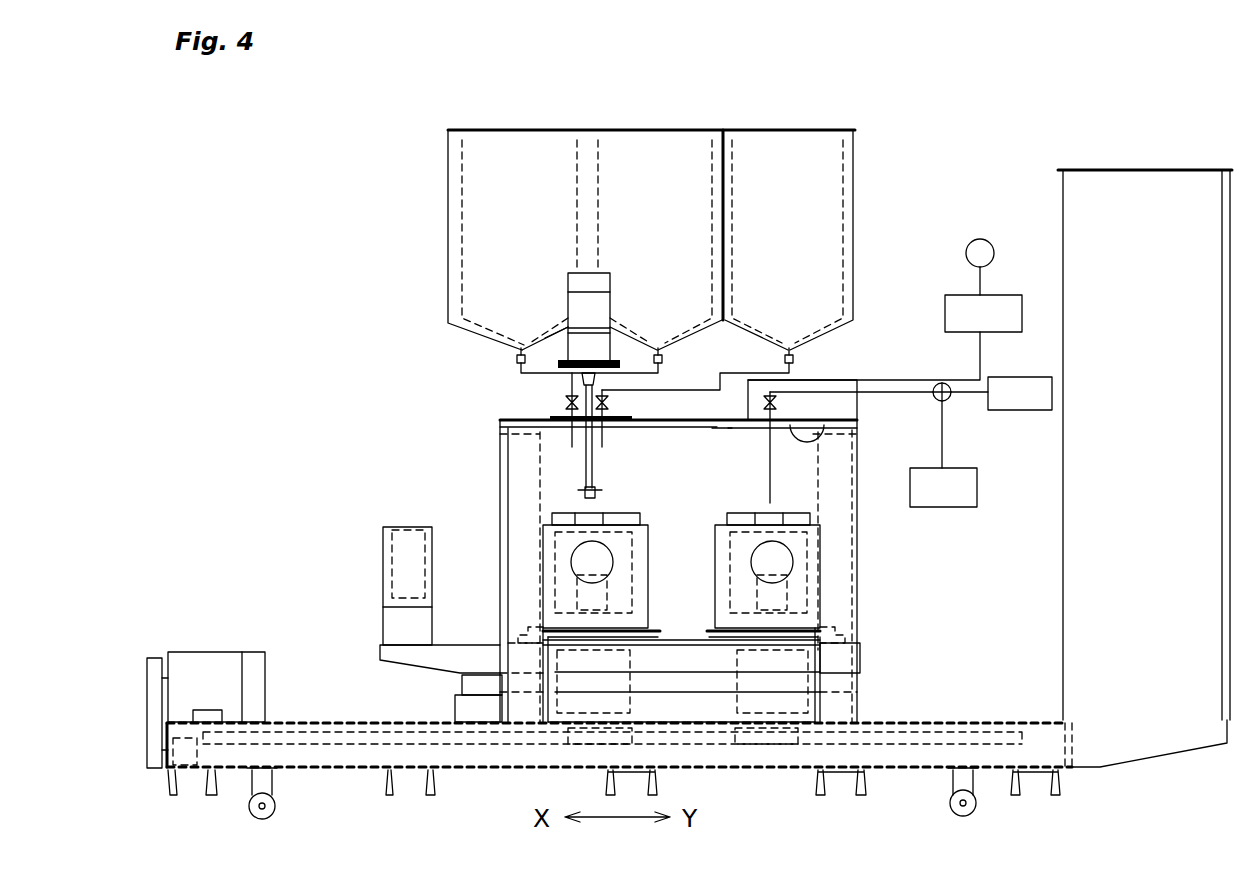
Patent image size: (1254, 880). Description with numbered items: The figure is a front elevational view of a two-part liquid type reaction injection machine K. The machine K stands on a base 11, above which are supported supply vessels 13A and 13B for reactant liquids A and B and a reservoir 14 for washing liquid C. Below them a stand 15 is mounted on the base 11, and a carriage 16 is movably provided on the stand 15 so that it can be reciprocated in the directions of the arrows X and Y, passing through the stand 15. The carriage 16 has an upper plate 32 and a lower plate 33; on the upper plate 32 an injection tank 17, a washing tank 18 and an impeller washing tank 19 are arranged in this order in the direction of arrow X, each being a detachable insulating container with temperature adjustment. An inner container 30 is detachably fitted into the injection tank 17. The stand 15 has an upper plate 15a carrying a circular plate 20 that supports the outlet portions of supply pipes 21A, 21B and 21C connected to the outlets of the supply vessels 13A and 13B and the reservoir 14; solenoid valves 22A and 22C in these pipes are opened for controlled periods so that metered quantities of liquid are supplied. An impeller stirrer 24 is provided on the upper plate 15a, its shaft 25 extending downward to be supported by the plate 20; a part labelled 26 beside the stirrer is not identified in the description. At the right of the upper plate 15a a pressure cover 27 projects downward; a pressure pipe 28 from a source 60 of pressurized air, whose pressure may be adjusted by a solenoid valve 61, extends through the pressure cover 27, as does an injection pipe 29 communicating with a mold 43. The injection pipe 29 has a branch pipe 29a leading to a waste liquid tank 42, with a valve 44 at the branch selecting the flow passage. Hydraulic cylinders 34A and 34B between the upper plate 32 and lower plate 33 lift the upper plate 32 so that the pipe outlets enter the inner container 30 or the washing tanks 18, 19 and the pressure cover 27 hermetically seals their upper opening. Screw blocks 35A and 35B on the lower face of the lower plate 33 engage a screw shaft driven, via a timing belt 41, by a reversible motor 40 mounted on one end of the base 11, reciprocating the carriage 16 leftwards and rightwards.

The reaction injection machine K is at (973, 98).
The base 11 is at (805, 756).
The supply vessel 13A is at (513, 150).
The supply vessel 13B is at (663, 160).
The reservoir 14 is at (780, 155).
The stand 15 is at (860, 456).
The upper plate 15a is at (718, 430).
The carriage 16 is at (378, 646).
The injection tank 17 is at (828, 538).
The washing tank 18 is at (637, 530).
The impeller washing tank 19 is at (433, 555).
The circular plate 20 is at (550, 418).
The supply pipe 21A is at (515, 368).
The supply pipe 21B is at (665, 358).
The supply pipe 21C is at (797, 358).
The solenoid valve 22A is at (566, 402).
The solenoid valve 22C is at (612, 400).
The impeller stirrer 24 is at (592, 273).
The shaft 25 is at (598, 465).
The motor mount 26 is at (567, 333).
The pressure cover 27 is at (837, 425).
The pressure pipe 28 is at (790, 380).
The injection pipe 29 is at (805, 392).
The branch pipe 29a is at (945, 443).
The inner container 30 is at (797, 590).
The upper plate 32 is at (672, 660).
The lower plate 33 is at (702, 700).
The hydraulic cylinder 34A is at (462, 680).
The hydraulic cylinder 34B is at (860, 660).
The screw block 35A is at (568, 735).
The screw block 35B is at (738, 745).
The reversible motor 40 is at (207, 660).
The timing belt 41 is at (152, 700).
The waste liquid tank 42 is at (945, 507).
The mold 43 is at (1028, 411).
The valve 44 is at (948, 400).
The source of pressurized air 60 is at (980, 239).
The solenoid valve 61 is at (1012, 295).